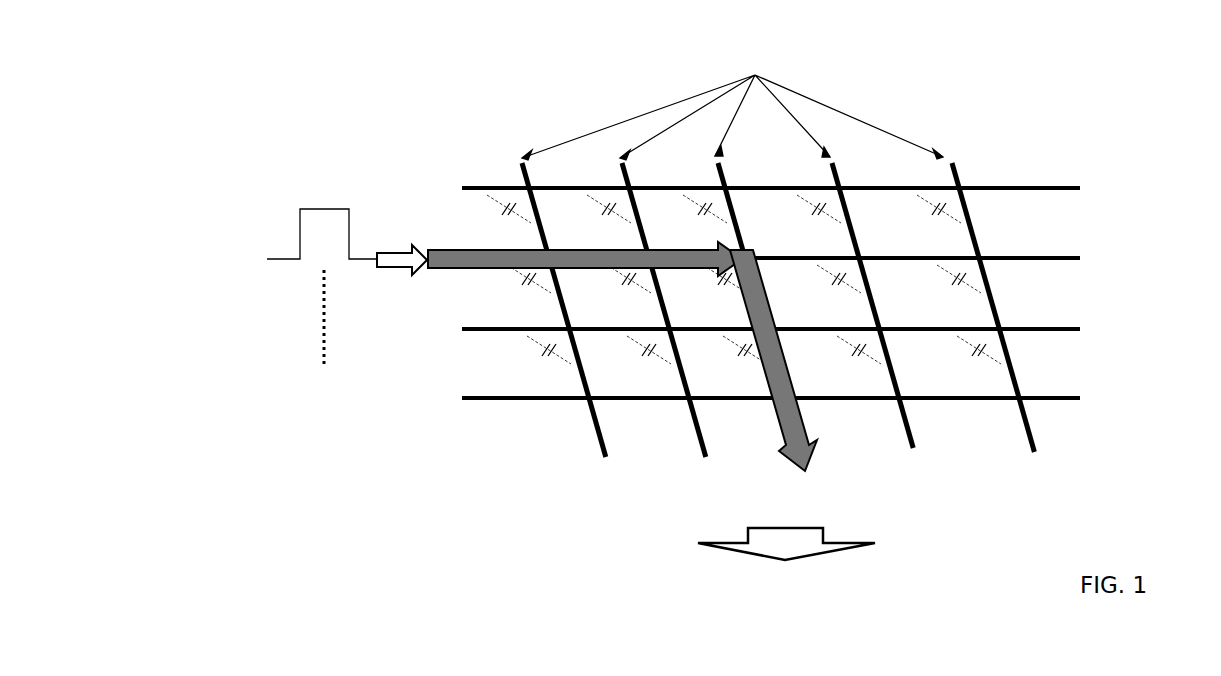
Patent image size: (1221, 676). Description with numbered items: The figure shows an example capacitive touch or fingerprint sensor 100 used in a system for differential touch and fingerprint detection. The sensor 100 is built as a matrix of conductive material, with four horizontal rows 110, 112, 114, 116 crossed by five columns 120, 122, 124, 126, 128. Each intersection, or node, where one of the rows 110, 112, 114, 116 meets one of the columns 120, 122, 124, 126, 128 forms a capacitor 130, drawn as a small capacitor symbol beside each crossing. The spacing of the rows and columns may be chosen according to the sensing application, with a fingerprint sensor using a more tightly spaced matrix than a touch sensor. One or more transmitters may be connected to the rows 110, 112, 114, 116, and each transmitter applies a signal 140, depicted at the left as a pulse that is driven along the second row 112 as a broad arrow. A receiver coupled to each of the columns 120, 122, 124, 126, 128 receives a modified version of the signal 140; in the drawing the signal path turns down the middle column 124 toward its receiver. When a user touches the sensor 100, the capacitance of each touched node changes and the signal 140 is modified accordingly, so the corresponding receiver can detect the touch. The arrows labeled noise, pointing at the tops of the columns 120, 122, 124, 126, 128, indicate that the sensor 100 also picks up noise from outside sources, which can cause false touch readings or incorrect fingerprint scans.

The capacitive touch or fingerprint sensor 100 is at (403, 96).
The row 110 is at (1067, 193).
The row 112 is at (1067, 263).
The row 114 is at (1067, 334).
The row 116 is at (1067, 403).
The column 120 is at (598, 457).
The column 122 is at (699, 457).
The column 124 is at (790, 458).
The column 126 is at (911, 451).
The column 128 is at (1029, 455).
The capacitor 130 is at (500, 199).
The signal 140 is at (295, 258).